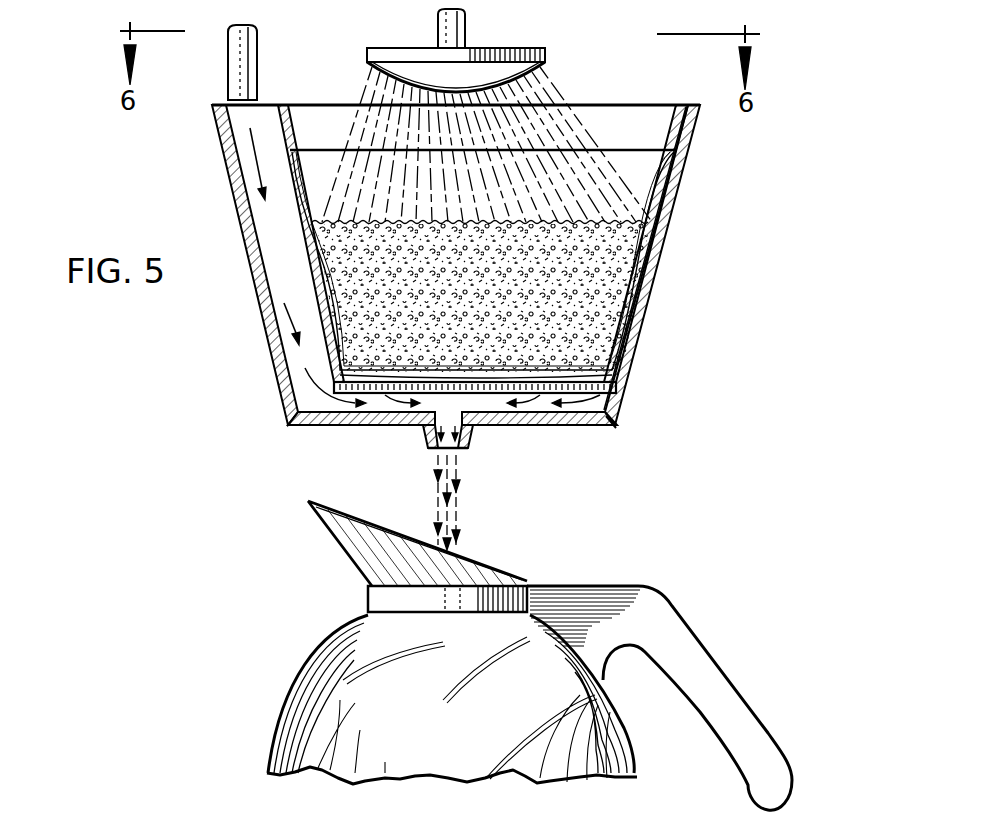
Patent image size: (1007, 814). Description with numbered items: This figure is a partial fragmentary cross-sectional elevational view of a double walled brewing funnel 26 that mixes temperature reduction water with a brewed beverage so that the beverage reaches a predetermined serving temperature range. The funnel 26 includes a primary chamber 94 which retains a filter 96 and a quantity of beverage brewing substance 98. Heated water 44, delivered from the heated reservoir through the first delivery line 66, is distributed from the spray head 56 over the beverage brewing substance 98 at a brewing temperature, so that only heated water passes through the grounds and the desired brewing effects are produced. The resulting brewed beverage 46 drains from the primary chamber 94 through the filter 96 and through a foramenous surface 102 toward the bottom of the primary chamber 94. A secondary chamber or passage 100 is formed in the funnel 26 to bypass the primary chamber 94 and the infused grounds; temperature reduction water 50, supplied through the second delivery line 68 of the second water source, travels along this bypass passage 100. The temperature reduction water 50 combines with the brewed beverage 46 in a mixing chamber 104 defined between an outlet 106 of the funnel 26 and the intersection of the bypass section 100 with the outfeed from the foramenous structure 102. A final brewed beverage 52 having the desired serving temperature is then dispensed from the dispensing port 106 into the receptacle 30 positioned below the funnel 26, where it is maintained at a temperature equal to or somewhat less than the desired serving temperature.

The brewing funnel 26 is at (284, 388).
The receptacle 30 is at (327, 690).
The heated water 44 is at (565, 128).
The brewed beverage 46 is at (579, 426).
The temperature reduction water 50 is at (290, 306).
The final brewed beverage 52 is at (437, 500).
The spray head 56 is at (378, 70).
The first delivery line 66 is at (444, 28).
The second delivery line 68 is at (232, 70).
The primary chamber 94 is at (667, 133).
The filter 96 is at (670, 213).
The beverage brewing substance 98 is at (650, 305).
The secondary chamber or passage 100 is at (278, 232).
The foramenous surface 102 is at (617, 433).
The mixing chamber 104 is at (550, 428).
The outlet 106 is at (462, 450).